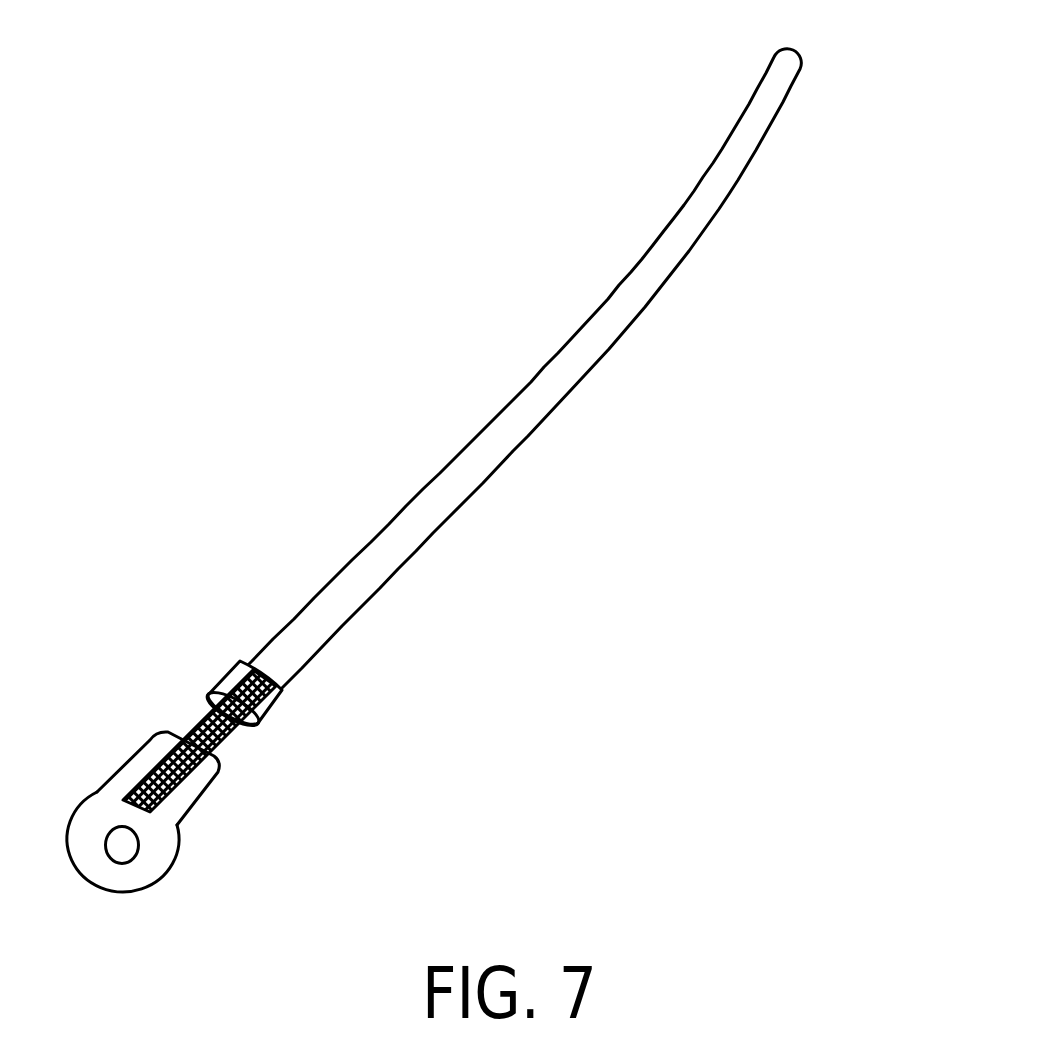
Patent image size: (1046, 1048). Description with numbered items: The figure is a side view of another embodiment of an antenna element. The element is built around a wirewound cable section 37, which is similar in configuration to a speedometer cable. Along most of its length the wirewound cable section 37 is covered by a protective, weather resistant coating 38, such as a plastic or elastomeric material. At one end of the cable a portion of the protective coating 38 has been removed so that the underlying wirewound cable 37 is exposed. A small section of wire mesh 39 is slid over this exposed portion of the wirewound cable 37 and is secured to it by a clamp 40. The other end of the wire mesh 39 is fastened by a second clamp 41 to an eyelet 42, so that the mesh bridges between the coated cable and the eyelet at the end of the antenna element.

The wirewound cable section 37 is at (823, 108).
The protective coating 38 is at (522, 443).
The wire mesh 39 is at (248, 762).
The clamp 40 is at (296, 723).
The clamp 41 is at (143, 753).
The eyelet 42 is at (176, 909).